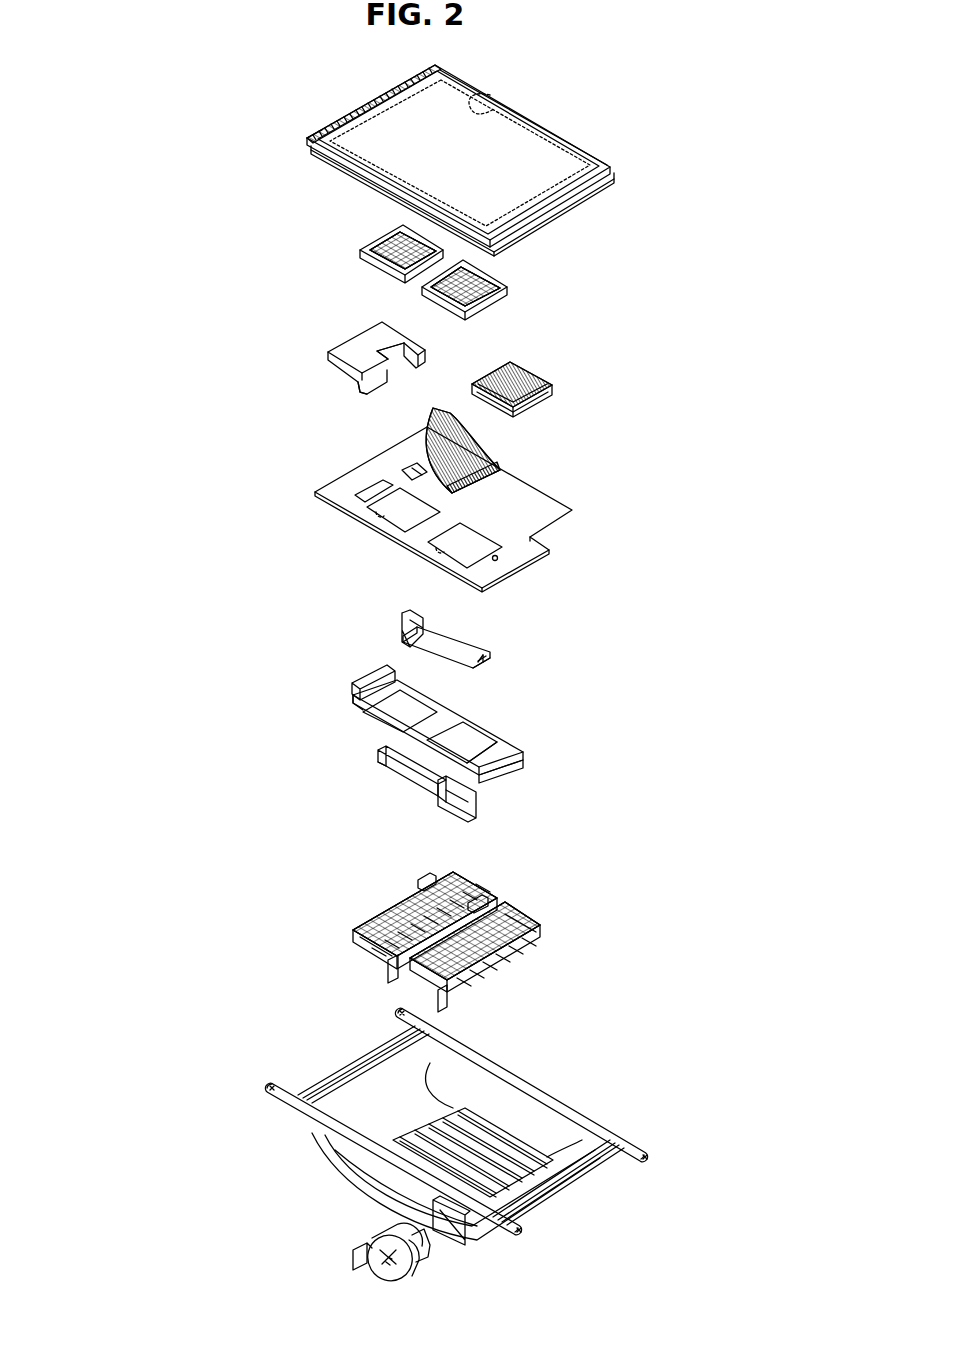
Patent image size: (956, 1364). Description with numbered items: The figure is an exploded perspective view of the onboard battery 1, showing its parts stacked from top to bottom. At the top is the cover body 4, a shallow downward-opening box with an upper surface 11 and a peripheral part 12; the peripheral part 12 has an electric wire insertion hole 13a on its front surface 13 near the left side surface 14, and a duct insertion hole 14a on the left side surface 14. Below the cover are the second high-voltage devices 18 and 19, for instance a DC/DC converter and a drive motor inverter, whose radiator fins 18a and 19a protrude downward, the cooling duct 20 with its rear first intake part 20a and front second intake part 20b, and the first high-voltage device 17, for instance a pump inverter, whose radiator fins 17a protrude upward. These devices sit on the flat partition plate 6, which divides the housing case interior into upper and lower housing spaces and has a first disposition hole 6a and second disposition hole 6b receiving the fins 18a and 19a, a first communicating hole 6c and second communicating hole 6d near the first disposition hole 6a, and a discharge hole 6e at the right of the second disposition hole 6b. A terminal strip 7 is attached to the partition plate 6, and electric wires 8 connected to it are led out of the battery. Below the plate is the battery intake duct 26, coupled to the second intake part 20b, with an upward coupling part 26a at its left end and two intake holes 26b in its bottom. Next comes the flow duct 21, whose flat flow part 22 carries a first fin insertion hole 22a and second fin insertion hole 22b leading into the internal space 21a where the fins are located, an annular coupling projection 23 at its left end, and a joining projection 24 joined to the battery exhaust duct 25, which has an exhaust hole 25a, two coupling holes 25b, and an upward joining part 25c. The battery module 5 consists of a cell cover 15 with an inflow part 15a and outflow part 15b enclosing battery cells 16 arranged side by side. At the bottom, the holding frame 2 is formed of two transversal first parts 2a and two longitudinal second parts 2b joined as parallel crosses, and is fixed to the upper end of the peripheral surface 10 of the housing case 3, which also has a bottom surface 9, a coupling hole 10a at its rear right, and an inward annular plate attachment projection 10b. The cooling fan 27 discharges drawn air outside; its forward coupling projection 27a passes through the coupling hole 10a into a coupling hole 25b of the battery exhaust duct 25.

The onboard battery 1 is at (116, 142).
The holding frame 2 is at (646, 1152).
The first parts 2a is at (624, 1130).
The second parts 2b is at (348, 1068).
The housing case 3 is at (326, 1146).
The cover body 4 is at (616, 172).
The battery module 5 is at (538, 922).
The partition plate 6 is at (540, 509).
The first disposition hole 6a is at (376, 512).
The second disposition hole 6b is at (432, 548).
The first communicating hole 6c is at (366, 480).
The second communicating hole 6d is at (410, 464).
The discharge hole 6e is at (498, 560).
The terminal strip 7 is at (490, 472).
The electric wires 8 is at (432, 416).
The bottom surface 9 is at (522, 1154).
The peripheral surface 10 is at (364, 1174).
The coupling hole 10a is at (460, 1246).
The plate attachment projection 10b is at (510, 1104).
The upper surface 11 is at (534, 128).
The peripheral part 12 is at (346, 160).
The front surface 13 is at (574, 146).
The electric wire insertion hole 13a is at (498, 92).
The left side surface 14 is at (400, 87).
The duct insertion hole 14a is at (346, 114).
The cell cover 15 is at (354, 944).
The inflow part 15a is at (426, 878).
The outflow part 15b is at (392, 974).
The battery cells 16 is at (396, 902).
The first high-voltage device 17 is at (554, 396).
The radiator fins 17a is at (525, 362).
The second high-voltage device 18 is at (374, 240).
The radiator fins 18a is at (392, 228).
The second high-voltage device 19 is at (488, 274).
The radiator fins 19a is at (506, 290).
The cooling duct 20 is at (341, 346).
The first intake part 20a is at (350, 396).
The second intake part 20b is at (432, 360).
The flow duct 21 is at (492, 754).
The internal space 21a is at (470, 734).
The flow part 22 is at (404, 714).
The first fin insertion hole 22a is at (362, 710).
The second fin insertion hole 22b is at (480, 756).
The coupling projection 23 is at (370, 672).
The joining projection 24 is at (496, 773).
The battery exhaust duct 25 is at (420, 782).
The exhaust hole 25a is at (476, 814).
The coupling holes 25b is at (374, 766).
The joining part 25c is at (472, 790).
The battery intake duct 26 is at (446, 642).
The coupling part 26a is at (402, 616).
The intake holes 26b is at (438, 628).
The cooling fan 27 is at (372, 1272).
The coupling projection 27a is at (426, 1256).